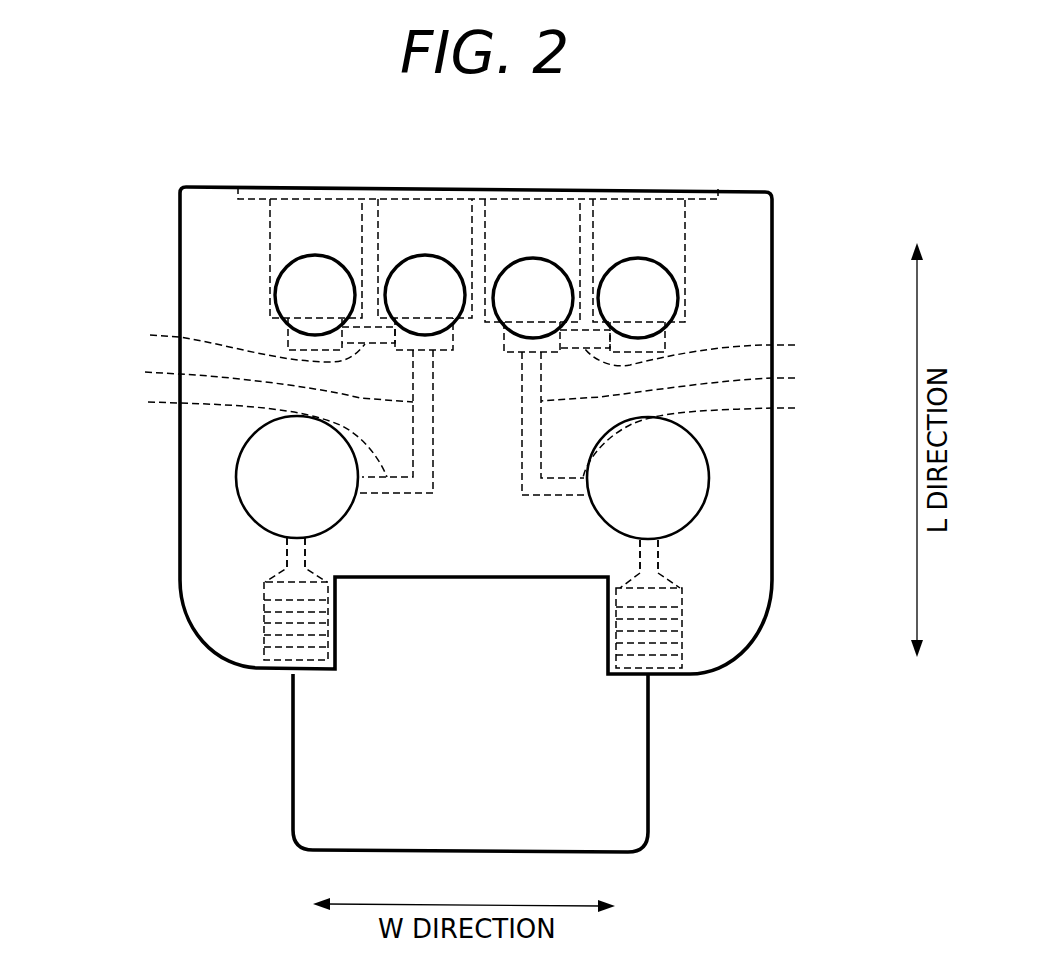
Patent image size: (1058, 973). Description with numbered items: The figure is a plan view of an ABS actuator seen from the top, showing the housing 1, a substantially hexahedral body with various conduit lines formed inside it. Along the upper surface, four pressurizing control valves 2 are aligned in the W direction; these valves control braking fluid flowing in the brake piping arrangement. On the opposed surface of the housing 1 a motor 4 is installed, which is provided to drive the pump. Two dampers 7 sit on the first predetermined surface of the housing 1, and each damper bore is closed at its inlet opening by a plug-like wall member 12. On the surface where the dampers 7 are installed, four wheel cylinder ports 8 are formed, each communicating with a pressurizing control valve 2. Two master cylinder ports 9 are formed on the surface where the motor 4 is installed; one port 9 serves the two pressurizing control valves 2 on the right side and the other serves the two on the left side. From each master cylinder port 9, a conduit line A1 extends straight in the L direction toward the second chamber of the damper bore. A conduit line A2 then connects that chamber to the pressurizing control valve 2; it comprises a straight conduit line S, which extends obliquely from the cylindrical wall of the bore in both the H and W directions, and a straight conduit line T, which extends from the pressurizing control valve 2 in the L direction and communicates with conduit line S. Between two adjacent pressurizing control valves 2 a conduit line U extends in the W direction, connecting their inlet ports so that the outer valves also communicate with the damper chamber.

The housing 1 is at (772, 216).
The pressurizing control valve 2 is at (362, 233).
The motor 4 is at (293, 750).
The damper 7 is at (230, 468).
The wheel cylinder port 8 is at (311, 258).
The master cylinder port 9 is at (263, 626).
The plug-like wall member 12 is at (258, 510).
The conduit line A1 is at (287, 548).
The conduit line A2 is at (483, 400).
The conduit line U is at (481, 344).
The conduit line T is at (482, 380).
The conduit line S is at (480, 432).